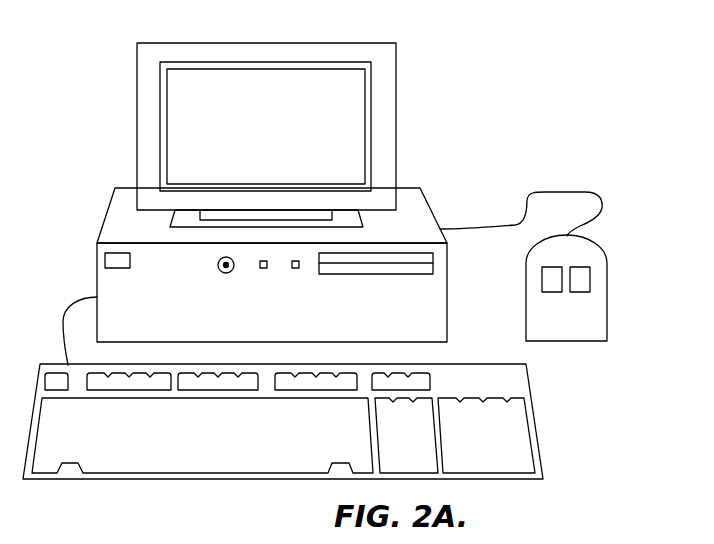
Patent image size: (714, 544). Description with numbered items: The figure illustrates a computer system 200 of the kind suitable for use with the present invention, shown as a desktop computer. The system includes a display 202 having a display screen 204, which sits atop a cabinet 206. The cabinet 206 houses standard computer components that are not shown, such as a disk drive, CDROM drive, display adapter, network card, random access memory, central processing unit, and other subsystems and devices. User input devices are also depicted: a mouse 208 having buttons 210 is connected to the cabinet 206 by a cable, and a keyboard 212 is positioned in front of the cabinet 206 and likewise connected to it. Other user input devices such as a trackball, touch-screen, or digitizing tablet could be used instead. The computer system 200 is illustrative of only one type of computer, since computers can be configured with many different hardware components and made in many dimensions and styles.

The computer system 200 is at (512, 32).
The display 202 is at (397, 112).
The display screen 204 is at (330, 87).
The cabinet 206 is at (412, 213).
The mouse 208 is at (587, 307).
The buttons 210 is at (553, 267).
The keyboard 212 is at (193, 480).